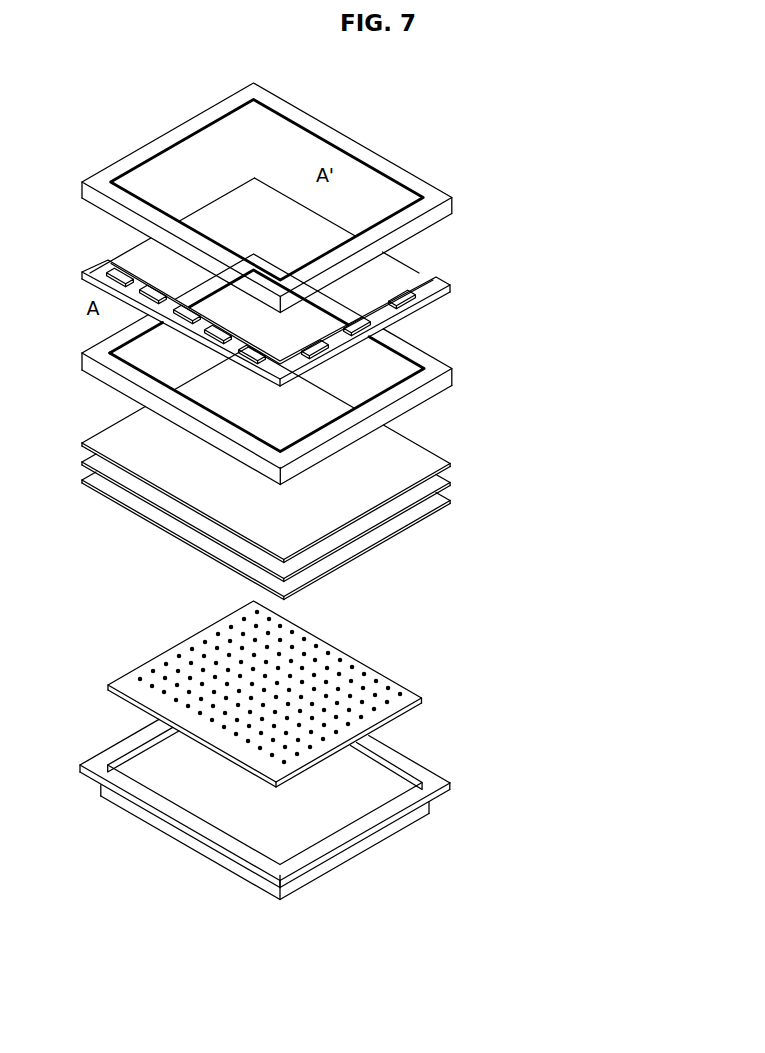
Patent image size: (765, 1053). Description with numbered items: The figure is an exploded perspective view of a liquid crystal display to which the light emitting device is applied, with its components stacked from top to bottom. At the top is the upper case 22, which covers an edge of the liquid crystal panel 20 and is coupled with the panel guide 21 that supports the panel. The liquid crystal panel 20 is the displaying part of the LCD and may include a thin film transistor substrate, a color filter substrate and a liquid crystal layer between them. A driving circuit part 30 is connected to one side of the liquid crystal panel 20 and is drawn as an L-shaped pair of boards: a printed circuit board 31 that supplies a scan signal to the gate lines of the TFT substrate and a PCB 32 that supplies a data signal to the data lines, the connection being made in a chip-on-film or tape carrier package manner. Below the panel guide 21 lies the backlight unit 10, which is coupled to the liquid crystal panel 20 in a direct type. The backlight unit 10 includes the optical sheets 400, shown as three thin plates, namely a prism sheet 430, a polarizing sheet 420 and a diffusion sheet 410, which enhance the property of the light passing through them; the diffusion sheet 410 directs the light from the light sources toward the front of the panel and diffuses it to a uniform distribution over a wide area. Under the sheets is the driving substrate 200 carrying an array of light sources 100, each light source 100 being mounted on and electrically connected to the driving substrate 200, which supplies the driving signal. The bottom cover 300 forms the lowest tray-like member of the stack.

The backlight unit 10 is at (608, 458).
The liquid crystal panel 20 is at (394, 261).
The panel guide 21 is at (454, 370).
The upper case 22 is at (454, 200).
The driving circuit part 30 is at (312, 323).
The printed circuit board 31 is at (444, 279).
The PCB 32 is at (100, 300).
The light source 100 is at (232, 694).
The driving substrate 200 is at (160, 652).
The bottom cover 300 is at (436, 762).
The optical sheets 400 is at (341, 473).
The diffusion sheet 410 is at (453, 501).
The polarizing sheet 420 is at (453, 483).
The prism sheet 430 is at (453, 464).